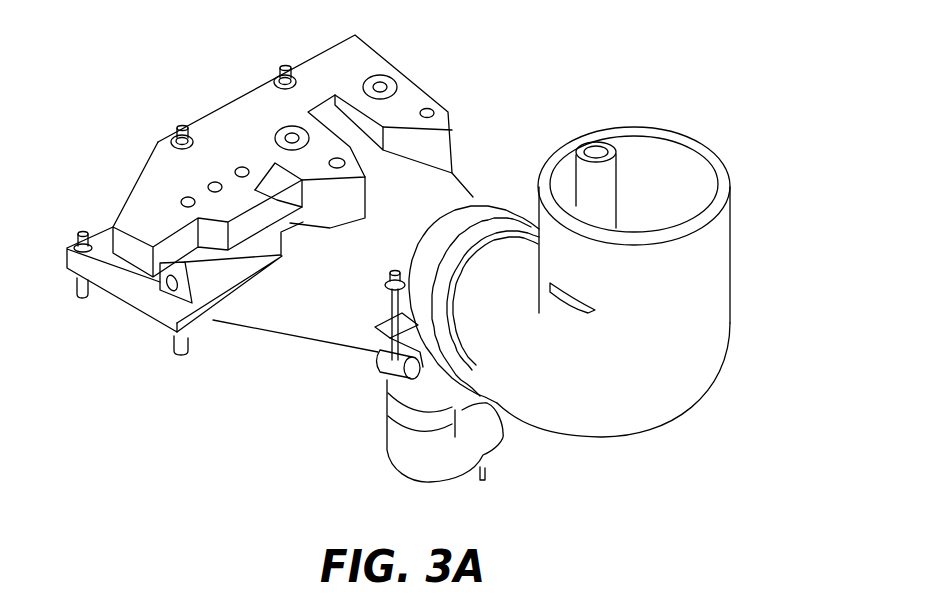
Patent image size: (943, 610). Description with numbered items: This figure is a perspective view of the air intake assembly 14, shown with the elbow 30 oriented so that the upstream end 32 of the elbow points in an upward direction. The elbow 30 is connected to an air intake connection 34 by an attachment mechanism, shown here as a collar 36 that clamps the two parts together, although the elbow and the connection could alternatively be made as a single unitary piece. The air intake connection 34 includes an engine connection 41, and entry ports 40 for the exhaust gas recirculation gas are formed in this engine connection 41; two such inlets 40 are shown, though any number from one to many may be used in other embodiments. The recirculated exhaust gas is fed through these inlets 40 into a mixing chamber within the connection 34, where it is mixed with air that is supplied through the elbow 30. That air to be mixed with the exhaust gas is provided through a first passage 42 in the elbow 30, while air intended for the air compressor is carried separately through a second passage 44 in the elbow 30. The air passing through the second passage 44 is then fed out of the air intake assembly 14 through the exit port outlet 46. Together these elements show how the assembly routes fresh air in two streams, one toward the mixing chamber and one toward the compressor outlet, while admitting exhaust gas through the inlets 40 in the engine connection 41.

The air intake assembly 14 is at (146, 403).
The elbow 30 is at (722, 358).
The upstream end 32 is at (738, 207).
The air intake connection 34 is at (297, 349).
The collar 36 is at (488, 208).
The entry ports 40 is at (288, 126).
The engine connection 41 is at (217, 123).
The first passage 42 is at (680, 178).
The second passage 44 is at (594, 146).
The exit port outlet 46 is at (483, 457).